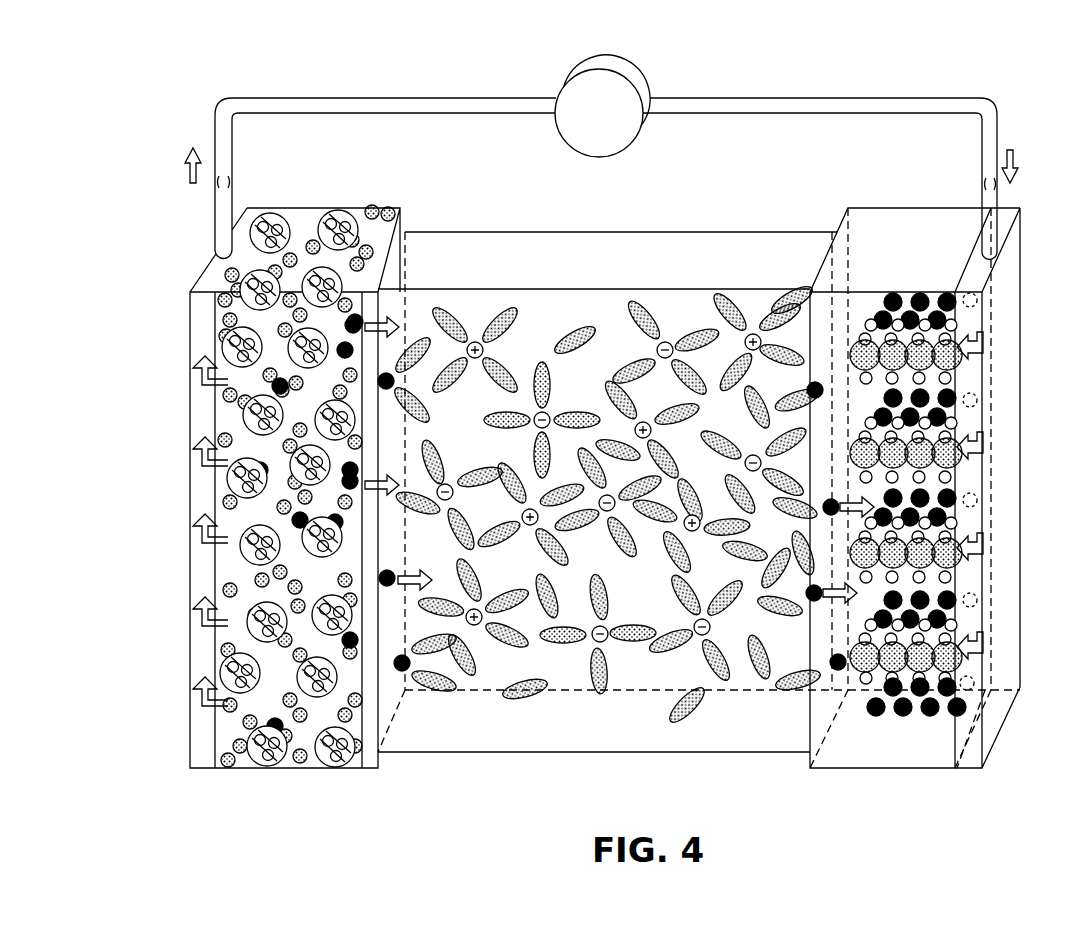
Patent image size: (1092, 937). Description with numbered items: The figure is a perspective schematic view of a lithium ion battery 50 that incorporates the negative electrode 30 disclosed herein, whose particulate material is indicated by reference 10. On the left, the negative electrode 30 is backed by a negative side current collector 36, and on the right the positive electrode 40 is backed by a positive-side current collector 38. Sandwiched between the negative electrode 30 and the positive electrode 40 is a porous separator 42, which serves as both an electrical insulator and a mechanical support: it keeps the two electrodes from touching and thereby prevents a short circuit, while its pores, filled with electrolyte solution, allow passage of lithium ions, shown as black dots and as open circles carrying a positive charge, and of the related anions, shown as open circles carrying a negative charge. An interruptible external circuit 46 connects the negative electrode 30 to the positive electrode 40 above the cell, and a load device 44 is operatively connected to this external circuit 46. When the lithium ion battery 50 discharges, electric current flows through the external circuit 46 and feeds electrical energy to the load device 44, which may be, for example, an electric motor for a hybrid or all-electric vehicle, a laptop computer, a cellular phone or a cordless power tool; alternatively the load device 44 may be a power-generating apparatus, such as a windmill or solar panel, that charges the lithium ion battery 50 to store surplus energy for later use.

The composite electrode particle 10 is at (343, 769).
The negative electrode 30 is at (343, 203).
The negative side current collector 36 is at (203, 730).
The positive-side current collector 38 is at (975, 752).
The positive electrode 40 is at (893, 205).
The porous separator 42 is at (672, 262).
The load device 44 is at (606, 55).
The external circuit 46 is at (397, 98).
The lithium ion battery 50 is at (1010, 118).